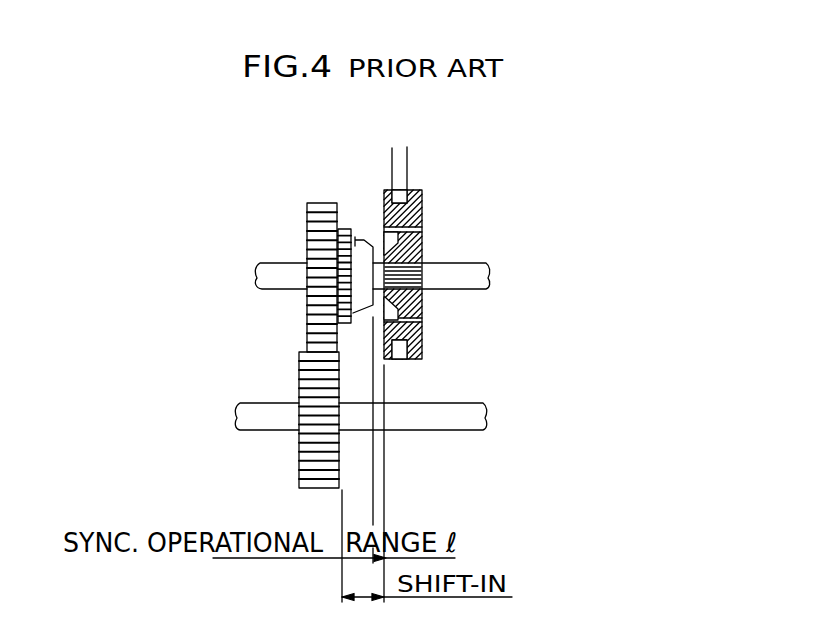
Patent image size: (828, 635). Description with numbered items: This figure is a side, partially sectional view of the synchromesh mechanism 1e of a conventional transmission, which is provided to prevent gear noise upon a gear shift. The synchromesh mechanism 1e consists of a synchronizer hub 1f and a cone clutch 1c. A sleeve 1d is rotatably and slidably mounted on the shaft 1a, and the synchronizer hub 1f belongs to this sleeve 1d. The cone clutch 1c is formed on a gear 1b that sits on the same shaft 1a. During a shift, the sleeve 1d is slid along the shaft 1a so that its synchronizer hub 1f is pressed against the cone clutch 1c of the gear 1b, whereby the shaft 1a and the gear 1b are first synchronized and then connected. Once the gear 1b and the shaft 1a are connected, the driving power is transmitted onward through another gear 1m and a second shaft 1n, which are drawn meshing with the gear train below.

The shaft 1a is at (277, 267).
The gear 1b is at (318, 203).
The cone clutch 1c is at (358, 238).
The sleeve 1d is at (422, 210).
The synchromesh mechanism 1e is at (335, 148).
The synchronizer hub 1f is at (382, 242).
The another gear 1m is at (300, 388).
The shaft 1n is at (447, 430).